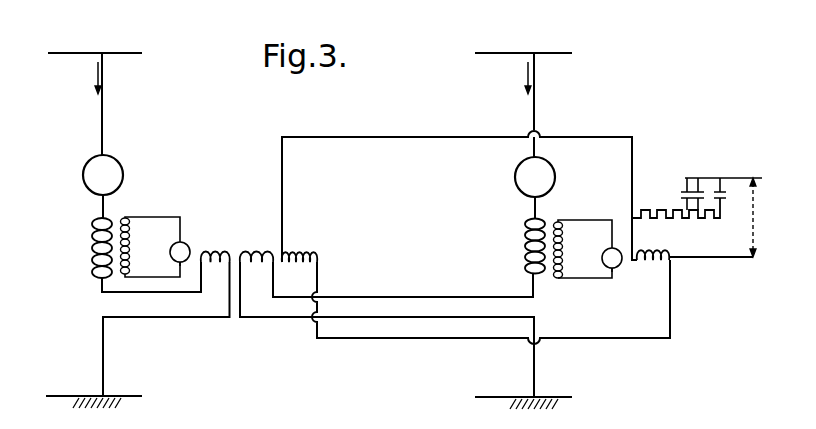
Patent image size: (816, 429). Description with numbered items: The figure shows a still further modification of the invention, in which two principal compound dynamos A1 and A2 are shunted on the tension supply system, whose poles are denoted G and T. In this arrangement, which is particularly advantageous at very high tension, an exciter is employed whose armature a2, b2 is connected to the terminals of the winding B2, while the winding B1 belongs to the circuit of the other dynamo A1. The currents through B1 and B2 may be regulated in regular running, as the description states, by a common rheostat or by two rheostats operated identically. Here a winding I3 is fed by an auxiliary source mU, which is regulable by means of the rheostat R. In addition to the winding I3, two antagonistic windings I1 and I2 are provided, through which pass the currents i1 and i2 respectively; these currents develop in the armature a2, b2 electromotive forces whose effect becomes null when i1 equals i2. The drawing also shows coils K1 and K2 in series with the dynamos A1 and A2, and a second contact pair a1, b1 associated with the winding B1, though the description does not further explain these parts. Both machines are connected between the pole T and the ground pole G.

The pole T is at (310, 91).
The current i2 is at (89, 78).
The current i1 is at (519, 78).
The principal compound dynamo A2 is at (90, 176).
The principal compound dynamo A1 is at (521, 177).
The compensating coil of second circuit K2 is at (88, 248).
The compensating coil of first circuit K1 is at (521, 246).
The winding B2 is at (147, 225).
The winding B1 is at (568, 240).
The exciter armature terminal a2 is at (175, 243).
The exciter armature terminal b2 is at (167, 270).
The contact a of relay B1 a1 is at (608, 248).
The contact b of relay B1 b1 is at (603, 272).
The transformer coil I2 is at (215, 244).
The transformer coil I1 is at (256, 244).
The winding I3 is at (475, 265).
The rheostat R is at (697, 213).
The auxiliary source mU is at (713, 217).
The pole G is at (311, 411).